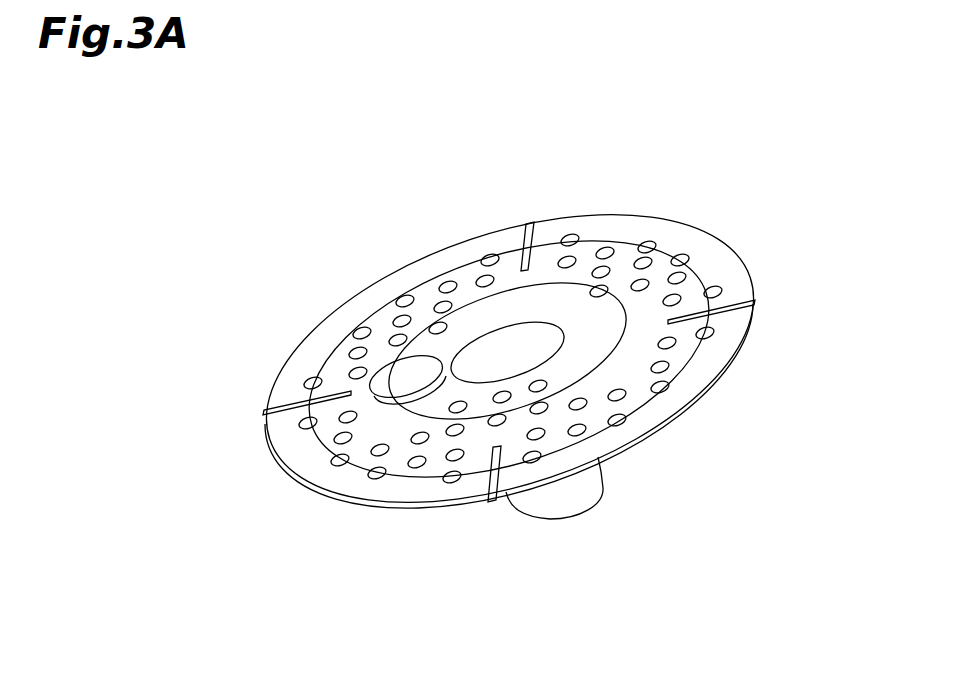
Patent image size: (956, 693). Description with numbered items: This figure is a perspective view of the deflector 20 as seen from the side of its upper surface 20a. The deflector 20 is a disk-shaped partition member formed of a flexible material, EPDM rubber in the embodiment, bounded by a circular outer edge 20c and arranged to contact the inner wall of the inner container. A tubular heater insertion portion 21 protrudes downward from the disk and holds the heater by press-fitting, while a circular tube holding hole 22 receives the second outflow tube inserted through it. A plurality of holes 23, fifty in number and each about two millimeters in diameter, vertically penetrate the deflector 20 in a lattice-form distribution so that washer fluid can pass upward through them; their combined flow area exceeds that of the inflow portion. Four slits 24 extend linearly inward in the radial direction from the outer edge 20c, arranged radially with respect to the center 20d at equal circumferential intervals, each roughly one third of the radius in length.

The deflector 20 is at (642, 150).
The upper surface 20a is at (698, 240).
The outer edge 20c is at (733, 366).
The center 20d is at (506, 351).
The heater insertion portion 21 is at (587, 490).
The tube holding hole 22 is at (386, 378).
The holes 23 is at (716, 290).
The slits 24 is at (530, 226).